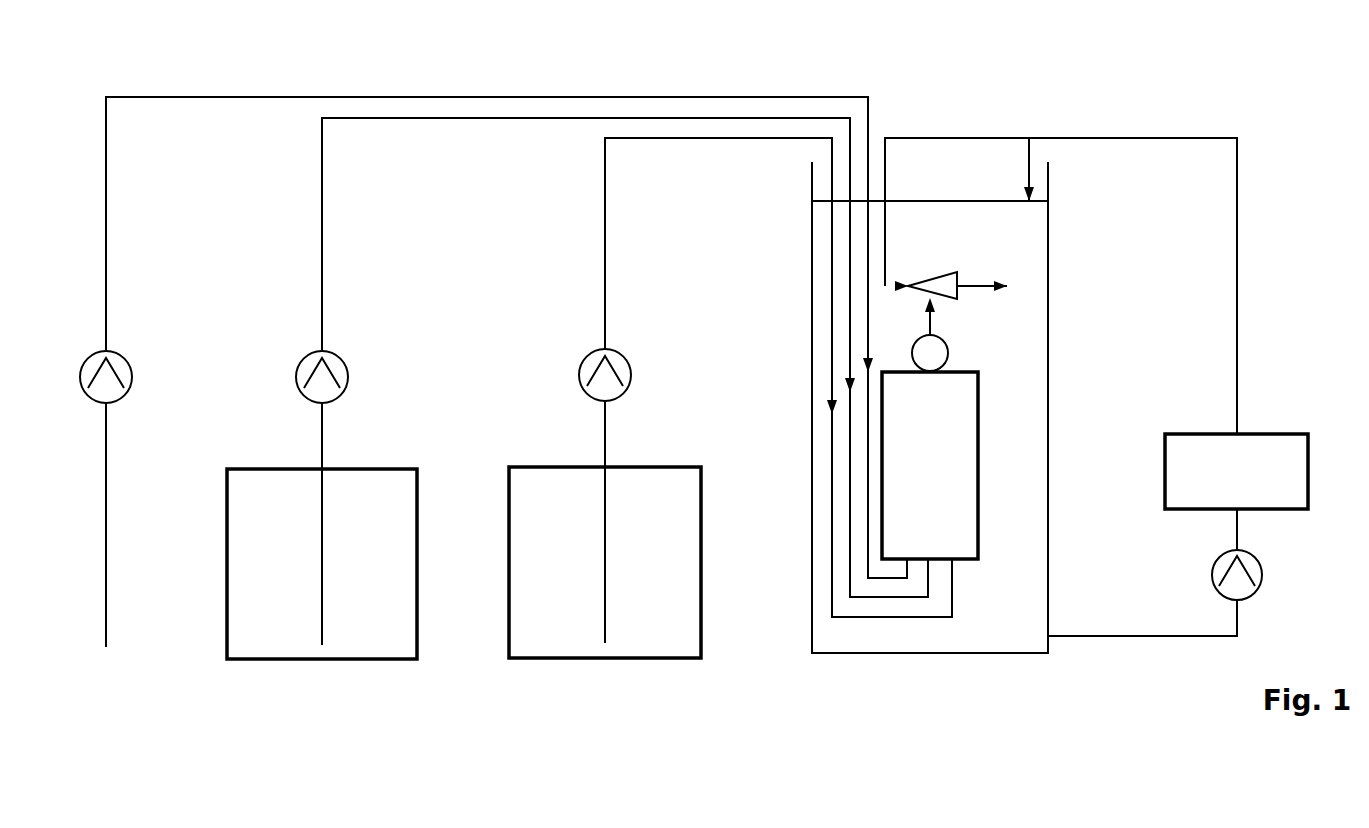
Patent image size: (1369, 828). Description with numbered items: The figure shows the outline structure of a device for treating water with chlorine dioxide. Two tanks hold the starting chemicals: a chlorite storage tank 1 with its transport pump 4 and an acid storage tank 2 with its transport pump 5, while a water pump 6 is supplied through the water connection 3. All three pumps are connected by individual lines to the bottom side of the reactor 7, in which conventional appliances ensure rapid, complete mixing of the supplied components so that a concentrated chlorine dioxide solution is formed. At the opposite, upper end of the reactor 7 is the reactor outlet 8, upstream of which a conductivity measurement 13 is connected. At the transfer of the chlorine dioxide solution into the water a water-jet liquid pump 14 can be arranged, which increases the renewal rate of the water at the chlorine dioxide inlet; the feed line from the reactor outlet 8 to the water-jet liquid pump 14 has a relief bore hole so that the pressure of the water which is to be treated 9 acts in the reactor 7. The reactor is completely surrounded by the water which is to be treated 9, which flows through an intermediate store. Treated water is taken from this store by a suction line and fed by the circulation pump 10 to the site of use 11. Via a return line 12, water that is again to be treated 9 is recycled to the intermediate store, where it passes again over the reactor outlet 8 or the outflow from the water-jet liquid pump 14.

The chlorite storage tank 1 is at (306, 564).
The acid storage tank 2 is at (587, 562).
The water connection 3 is at (490, 375).
The transport pump 4 is at (612, 381).
The transport pump 5 is at (765, 390).
The water pump 6 is at (119, 377).
The reactor 7 is at (930, 465).
The reactor outlet 8 is at (912, 320).
The water which is to be treated 9 is at (930, 407).
The circulation pump 10 is at (1178, 572).
The site of use 11 is at (1258, 472).
The return line 12 is at (1084, 286).
The conductivity measurement 13 is at (949, 353).
The water-jet liquid pump 14 is at (951, 267).